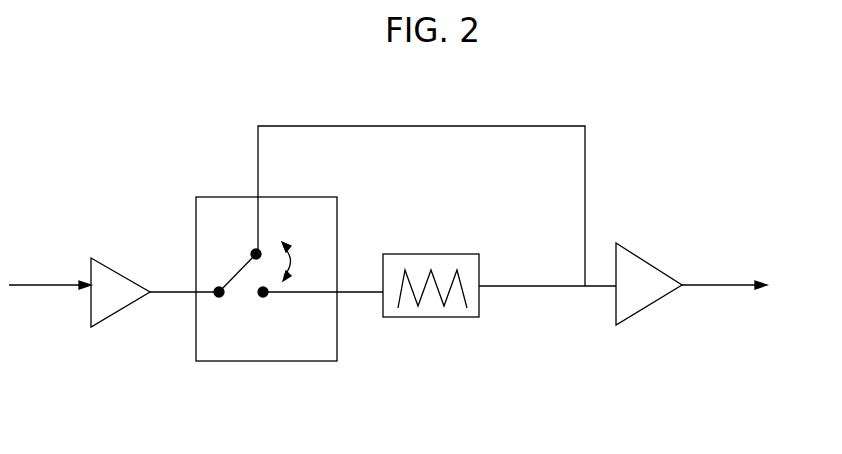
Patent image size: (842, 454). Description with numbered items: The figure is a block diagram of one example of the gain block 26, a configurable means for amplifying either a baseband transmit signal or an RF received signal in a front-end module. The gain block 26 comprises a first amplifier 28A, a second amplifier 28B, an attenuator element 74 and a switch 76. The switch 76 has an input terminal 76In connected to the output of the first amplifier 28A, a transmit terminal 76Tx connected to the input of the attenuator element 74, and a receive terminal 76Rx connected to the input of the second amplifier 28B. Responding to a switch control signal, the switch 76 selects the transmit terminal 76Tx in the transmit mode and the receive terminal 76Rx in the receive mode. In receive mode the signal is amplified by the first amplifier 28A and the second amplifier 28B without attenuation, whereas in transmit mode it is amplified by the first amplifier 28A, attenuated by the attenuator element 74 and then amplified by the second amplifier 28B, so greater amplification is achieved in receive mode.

The gain block 26 is at (278, 91).
The first amplifier 28A is at (116, 315).
The second amplifier 28B is at (650, 263).
The attenuator element 74 is at (418, 254).
The switch 76 is at (232, 361).
The input terminal 76In is at (214, 287).
The receive terminal 76Rx is at (234, 244).
The transmit terminal 76Tx is at (291, 310).